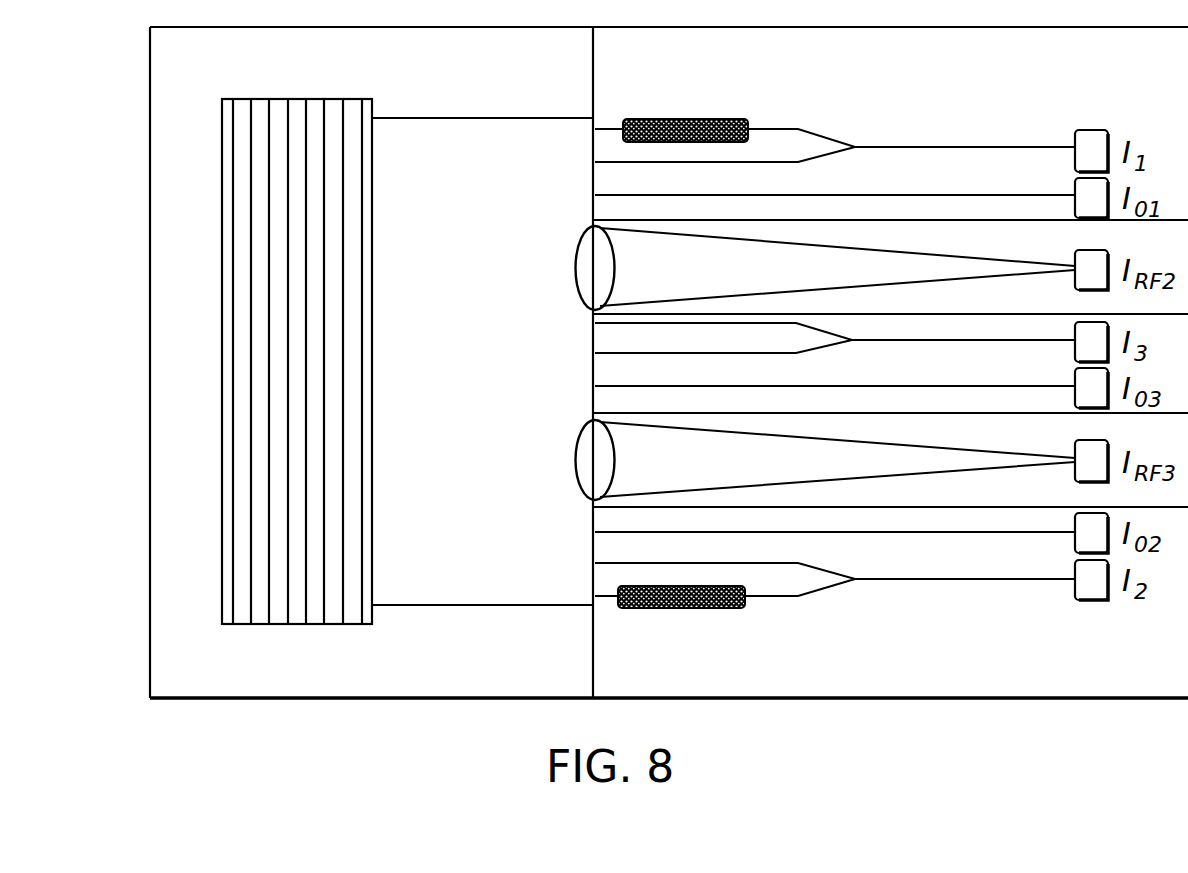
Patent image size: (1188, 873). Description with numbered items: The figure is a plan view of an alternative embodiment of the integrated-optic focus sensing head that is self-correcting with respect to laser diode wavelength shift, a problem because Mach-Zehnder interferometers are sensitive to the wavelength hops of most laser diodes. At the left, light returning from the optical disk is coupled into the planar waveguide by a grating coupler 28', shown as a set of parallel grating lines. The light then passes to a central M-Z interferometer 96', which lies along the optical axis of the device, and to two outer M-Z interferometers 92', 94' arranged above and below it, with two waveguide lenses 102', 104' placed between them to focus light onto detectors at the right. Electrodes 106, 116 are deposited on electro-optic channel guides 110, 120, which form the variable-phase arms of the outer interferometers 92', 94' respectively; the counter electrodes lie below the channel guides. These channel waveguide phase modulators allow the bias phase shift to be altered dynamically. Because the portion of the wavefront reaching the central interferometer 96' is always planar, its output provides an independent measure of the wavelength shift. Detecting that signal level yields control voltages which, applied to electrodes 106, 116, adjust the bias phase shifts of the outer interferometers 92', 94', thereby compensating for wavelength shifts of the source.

The grating coupler 28' is at (218, 361).
The outer M-Z interferometer 92' is at (782, 160).
The outer M-Z interferometer 94' is at (778, 564).
The central M-Z interferometer 96' is at (780, 362).
The waveguide lens 102' is at (769, 269).
The waveguide lens 104' is at (765, 464).
The electrode 106 is at (703, 119).
The electro-optic channel guide 110 is at (609, 128).
The electrode 116 is at (715, 608).
The electro-optic channel guide 120 is at (603, 597).